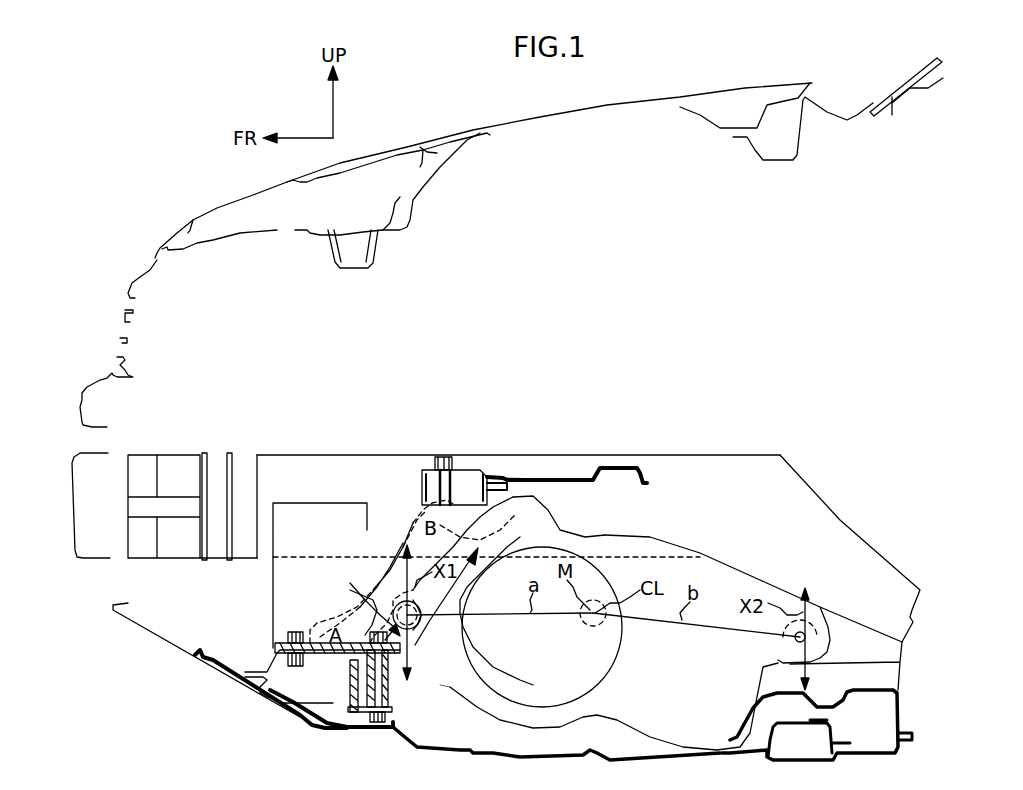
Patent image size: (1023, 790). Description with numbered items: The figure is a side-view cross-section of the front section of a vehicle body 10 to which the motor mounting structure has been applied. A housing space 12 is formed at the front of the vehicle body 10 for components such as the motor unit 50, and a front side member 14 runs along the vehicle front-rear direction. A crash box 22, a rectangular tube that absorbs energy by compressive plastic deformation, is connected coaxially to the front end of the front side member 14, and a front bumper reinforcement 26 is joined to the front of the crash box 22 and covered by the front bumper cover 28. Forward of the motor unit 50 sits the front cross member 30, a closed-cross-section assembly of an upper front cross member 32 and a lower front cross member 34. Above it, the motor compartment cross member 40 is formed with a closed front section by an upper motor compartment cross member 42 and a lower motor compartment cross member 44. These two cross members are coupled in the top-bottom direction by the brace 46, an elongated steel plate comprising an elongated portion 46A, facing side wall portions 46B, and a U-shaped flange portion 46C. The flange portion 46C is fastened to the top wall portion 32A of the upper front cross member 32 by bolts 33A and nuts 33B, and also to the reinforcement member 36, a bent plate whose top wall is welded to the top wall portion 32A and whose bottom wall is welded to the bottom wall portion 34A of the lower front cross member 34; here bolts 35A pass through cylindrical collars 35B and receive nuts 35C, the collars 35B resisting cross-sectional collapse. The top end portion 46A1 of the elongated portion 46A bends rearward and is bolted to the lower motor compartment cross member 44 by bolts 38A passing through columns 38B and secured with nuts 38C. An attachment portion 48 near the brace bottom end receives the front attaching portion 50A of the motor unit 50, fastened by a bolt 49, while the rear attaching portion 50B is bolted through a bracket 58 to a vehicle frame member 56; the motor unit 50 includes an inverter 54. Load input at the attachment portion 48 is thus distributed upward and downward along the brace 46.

The vehicle body 10 is at (893, 407).
The housing space 12 is at (656, 518).
The front side member 14 is at (617, 452).
The crash box 22 is at (218, 455).
The front bumper reinforcement 26 is at (163, 453).
The front bumper cover 28 is at (72, 482).
The front cross member 30 is at (257, 663).
The upper front cross member 32 is at (270, 657).
The top wall portion 32A is at (295, 663).
The bolt 33A is at (283, 625).
The nut 33B is at (285, 672).
The lower front cross member 34 is at (298, 706).
The bottom wall portion 34A is at (323, 710).
The bolt 35A is at (360, 637).
The collar 35B is at (393, 687).
The nut 35C is at (397, 725).
The reinforcement member 36 is at (393, 707).
The bolt 38A is at (512, 523).
The column 38B is at (470, 470).
The nut 38C is at (431, 456).
The motor compartment cross member 40 is at (557, 455).
The upper motor compartment cross member 42 is at (526, 475).
The lower motor compartment cross member 44 is at (464, 543).
The brace 46 is at (360, 571).
The elongated portion 46A is at (415, 505).
The top end portion 46A1 is at (505, 490).
The side wall portion 46B is at (403, 545).
The flange portion 46C is at (345, 630).
The attachment portion 48 is at (421, 586).
The bolt 49 is at (423, 613).
The motor unit 50 is at (665, 545).
The front attaching portion 50A is at (440, 685).
The rear attaching portion 50B is at (817, 647).
The inverter 54 is at (610, 668).
The vehicle frame member 56 is at (897, 712).
The bracket 58 is at (893, 673).